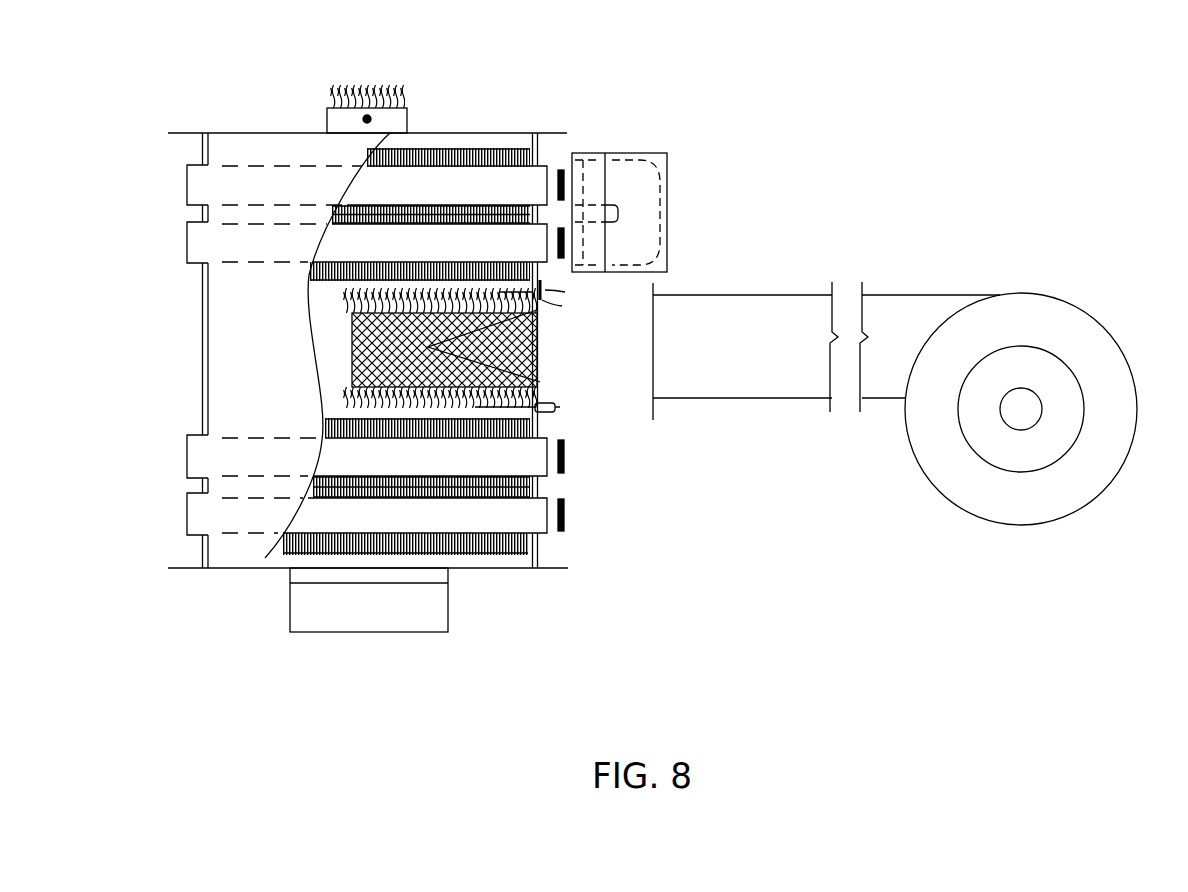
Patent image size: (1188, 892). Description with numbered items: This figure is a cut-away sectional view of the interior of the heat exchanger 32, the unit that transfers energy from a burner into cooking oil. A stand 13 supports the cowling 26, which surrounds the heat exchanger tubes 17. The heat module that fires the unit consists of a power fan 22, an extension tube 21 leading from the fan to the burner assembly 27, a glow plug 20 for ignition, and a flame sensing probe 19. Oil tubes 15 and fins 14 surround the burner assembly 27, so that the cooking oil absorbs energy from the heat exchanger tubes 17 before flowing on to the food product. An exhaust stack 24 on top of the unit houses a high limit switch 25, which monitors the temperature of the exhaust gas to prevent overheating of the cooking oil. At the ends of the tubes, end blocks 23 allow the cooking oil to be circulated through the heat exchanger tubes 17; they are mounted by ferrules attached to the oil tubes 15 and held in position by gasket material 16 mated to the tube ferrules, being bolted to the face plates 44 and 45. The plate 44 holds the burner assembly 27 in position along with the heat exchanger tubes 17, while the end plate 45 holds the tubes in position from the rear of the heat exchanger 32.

The stand 13 is at (448, 623).
The fins 14 is at (528, 556).
The oil tubes 15 is at (542, 535).
The gasket material 16 is at (565, 512).
The heat exchanger tubes 17 is at (535, 457).
The flame sensing probe 19 is at (565, 410).
The glow plug 20 is at (540, 281).
The extension tube 21 is at (768, 295).
The power fan 22 is at (950, 500).
The end blocks 23 is at (667, 198).
The exhaust stack 24 is at (405, 116).
The high limit switch 25 is at (362, 119).
The cowling 26 is at (550, 133).
The burner assembly 27 is at (352, 341).
The heat exchanger 32 is at (493, 562).
The face plate 44 is at (538, 423).
The end plate 45 is at (210, 380).